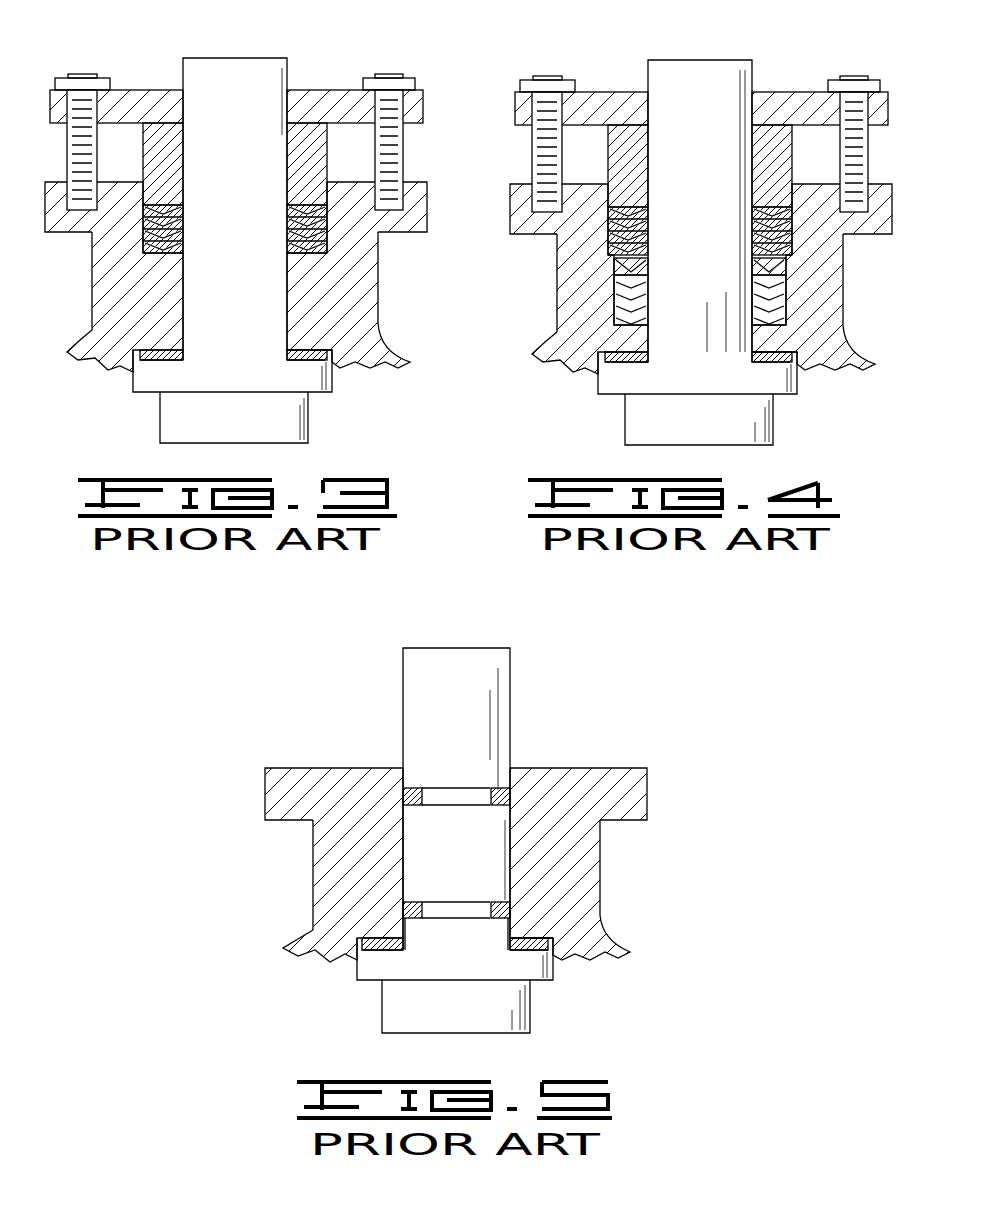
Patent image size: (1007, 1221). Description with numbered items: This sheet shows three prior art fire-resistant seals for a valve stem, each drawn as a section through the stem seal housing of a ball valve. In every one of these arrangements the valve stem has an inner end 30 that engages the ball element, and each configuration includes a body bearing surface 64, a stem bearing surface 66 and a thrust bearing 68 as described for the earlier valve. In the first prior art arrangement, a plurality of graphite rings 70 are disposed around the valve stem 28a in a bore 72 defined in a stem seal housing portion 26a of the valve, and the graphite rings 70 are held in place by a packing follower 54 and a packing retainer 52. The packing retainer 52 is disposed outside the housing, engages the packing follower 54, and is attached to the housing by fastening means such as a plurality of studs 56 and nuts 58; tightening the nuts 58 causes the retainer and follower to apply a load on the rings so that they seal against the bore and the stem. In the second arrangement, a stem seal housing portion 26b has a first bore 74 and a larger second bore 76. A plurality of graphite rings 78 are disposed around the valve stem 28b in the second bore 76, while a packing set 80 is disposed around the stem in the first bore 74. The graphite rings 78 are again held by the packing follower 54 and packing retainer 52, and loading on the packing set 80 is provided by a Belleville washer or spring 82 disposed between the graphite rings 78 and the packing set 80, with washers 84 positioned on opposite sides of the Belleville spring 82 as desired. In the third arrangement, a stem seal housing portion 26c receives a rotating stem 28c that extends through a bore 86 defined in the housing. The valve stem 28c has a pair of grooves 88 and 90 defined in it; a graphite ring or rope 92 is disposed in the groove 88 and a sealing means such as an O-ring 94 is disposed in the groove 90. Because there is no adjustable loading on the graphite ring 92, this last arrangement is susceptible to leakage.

In FIG. 3, the packing retainer 52 is at (420, 105).
In FIG. 4, the packing retainer 52 is at (708, 79).
In FIG. 3, the packing follower 54 is at (152, 135).
In FIG. 4, the packing follower 54 is at (668, 123).
In FIG. 3, the studs 56 is at (383, 110).
In FIG. 4, the studs 56 is at (700, 129).
In FIG. 3, the nuts 58 is at (400, 80).
In FIG. 4, the nuts 58 is at (700, 52).
In FIG. 3, the stem seal housing portion 26a is at (415, 195).
In FIG. 4, the stem seal housing portion 26b is at (710, 253).
In FIG. 5, the stem seal housing portion 26c is at (655, 775).
In FIG. 3, the valve stem 28a is at (200, 303).
In FIG. 4, the valve stem 28b is at (688, 295).
In FIG. 5, the rotating stem 28c is at (400, 855).
In FIG. 3, the graphite rings 70 is at (150, 240).
In FIG. 3, the bore 72 is at (322, 246).
In FIG. 3, the stem bearing surface 66 is at (322, 348).
In FIG. 4, the stem bearing surface 66 is at (825, 339).
In FIG. 5, the stem bearing surface 66 is at (555, 938).
In FIG. 3, the thrust bearing 68 is at (135, 358).
In FIG. 4, the thrust bearing 68 is at (661, 381).
In FIG. 5, the thrust bearing 68 is at (380, 945).
In FIG. 3, the inner end 30 is at (155, 372).
In FIG. 4, the inner end 30 is at (675, 397).
In FIG. 5, the inner end 30 is at (548, 970).
In FIG. 3, the body bearing surface 64 is at (305, 355).
In FIG. 4, the body bearing surface 64 is at (732, 401).
In FIG. 5, the body bearing surface 64 is at (520, 955).
In FIG. 4, the first bore 74 is at (571, 309).
In FIG. 4, the second bore 76 is at (571, 274).
In FIG. 4, the graphite rings 78 is at (753, 236).
In FIG. 4, the packing set 80 is at (825, 300).
In FIG. 4, the Belleville spring 82 is at (825, 275).
In FIG. 4, the washers 84 is at (710, 287).
In FIG. 5, the bore 86 is at (505, 875).
In FIG. 5, the groove 88 is at (505, 792).
In FIG. 5, the groove 90 is at (513, 905).
In FIG. 5, the graphite ring 92 is at (405, 790).
In FIG. 5, the O-ring 94 is at (400, 908).